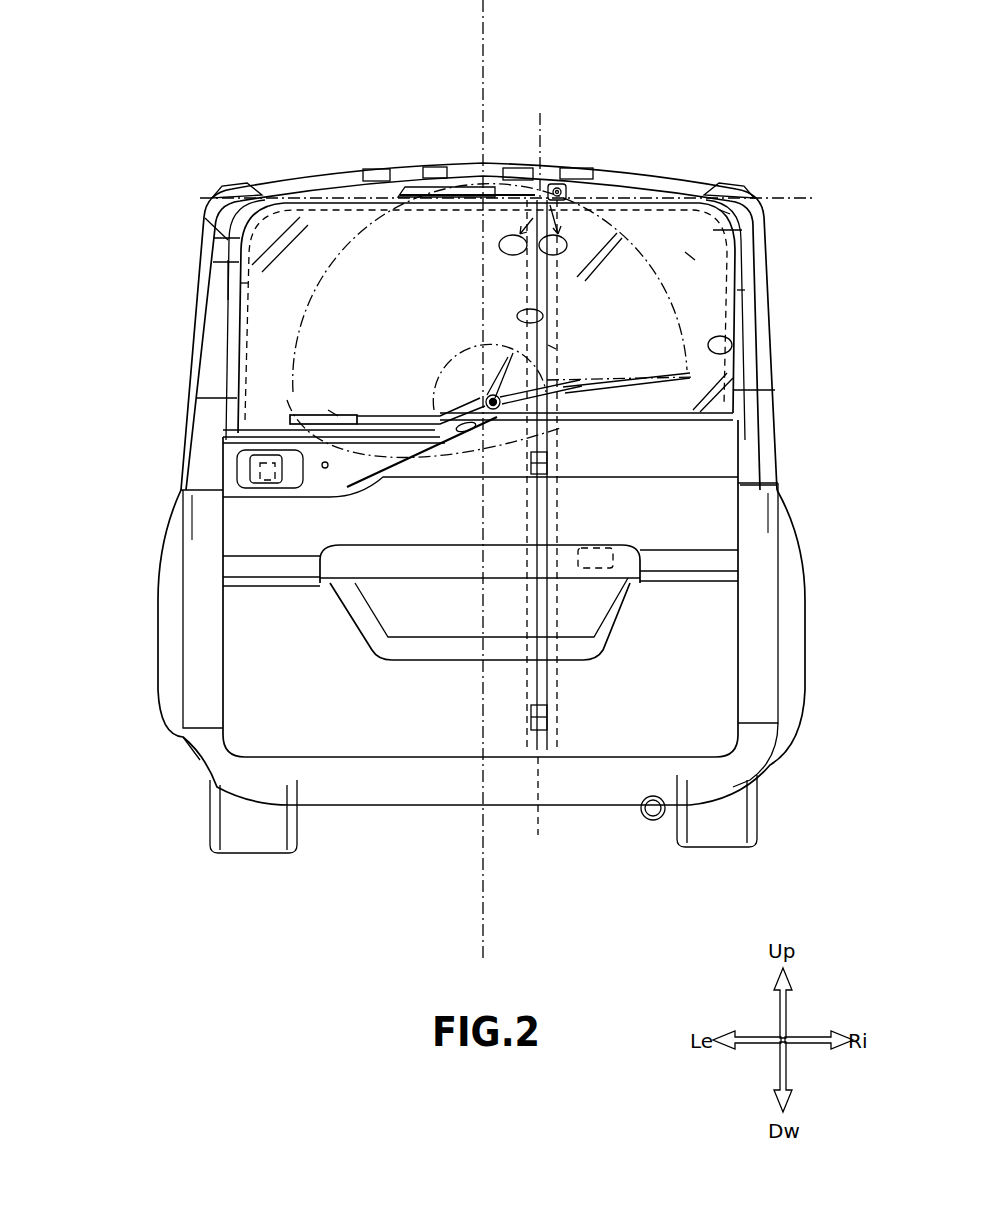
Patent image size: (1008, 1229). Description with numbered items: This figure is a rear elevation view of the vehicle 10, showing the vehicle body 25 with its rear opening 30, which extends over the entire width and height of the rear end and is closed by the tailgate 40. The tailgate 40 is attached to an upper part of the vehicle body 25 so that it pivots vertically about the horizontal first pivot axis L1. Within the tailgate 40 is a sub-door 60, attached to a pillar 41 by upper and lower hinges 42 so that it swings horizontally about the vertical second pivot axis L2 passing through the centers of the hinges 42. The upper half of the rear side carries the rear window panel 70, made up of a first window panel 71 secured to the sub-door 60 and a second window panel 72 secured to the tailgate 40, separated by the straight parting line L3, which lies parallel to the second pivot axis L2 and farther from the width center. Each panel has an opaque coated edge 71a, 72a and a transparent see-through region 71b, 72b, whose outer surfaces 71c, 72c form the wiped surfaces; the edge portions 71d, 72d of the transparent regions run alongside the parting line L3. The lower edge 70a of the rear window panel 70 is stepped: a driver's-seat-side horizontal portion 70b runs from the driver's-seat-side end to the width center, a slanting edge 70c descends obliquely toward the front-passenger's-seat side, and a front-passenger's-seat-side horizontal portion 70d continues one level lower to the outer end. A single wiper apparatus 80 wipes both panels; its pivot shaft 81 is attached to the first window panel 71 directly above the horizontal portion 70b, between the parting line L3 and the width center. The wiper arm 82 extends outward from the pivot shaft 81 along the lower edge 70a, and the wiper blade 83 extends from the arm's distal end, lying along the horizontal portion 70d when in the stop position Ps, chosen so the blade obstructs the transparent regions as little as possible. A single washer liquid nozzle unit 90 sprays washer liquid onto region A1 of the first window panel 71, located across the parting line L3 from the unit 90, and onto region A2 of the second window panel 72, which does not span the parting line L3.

The vehicle 10 is at (152, 102).
The vehicle body 25 is at (200, 210).
The rear opening 30 is at (732, 345).
The tailgate 40 is at (745, 622).
The pillar 41 is at (528, 690).
The hinge 42 is at (547, 462).
The sub-door 60 is at (218, 682).
The rear window panel 70 is at (657, 83).
The lower edge 70a is at (118, 340).
The driver's-seat-side horizontal portion 70b is at (347, 457).
The slanting edge 70c is at (333, 433).
The front-passenger's-seat-side horizontal portion 70d is at (287, 450).
The first window panel 71 is at (513, 222).
The opaque edge 71a is at (212, 248).
The transparent region 71b is at (273, 268).
The outer surface 71c is at (260, 278).
The edge portion 71d is at (543, 316).
The second window panel 72 is at (609, 222).
The opaque edge 72a is at (730, 212).
The transparent region 72b is at (690, 256).
The outer surface 72c is at (693, 299).
The edge portion 72d is at (553, 347).
The wiper apparatus 80 is at (430, 83).
The pivot shaft 81 is at (490, 397).
The wiper arm 82 is at (443, 412).
The wiper blade 83 is at (323, 420).
The washer liquid nozzle unit 90 is at (560, 186).
The region A1 is at (513, 255).
The region A2 is at (560, 253).
The first pivot axis L1 is at (790, 190).
The second pivot axis L2 is at (538, 835).
The parting line L3 is at (540, 120).
The stop position Ps is at (333, 413).